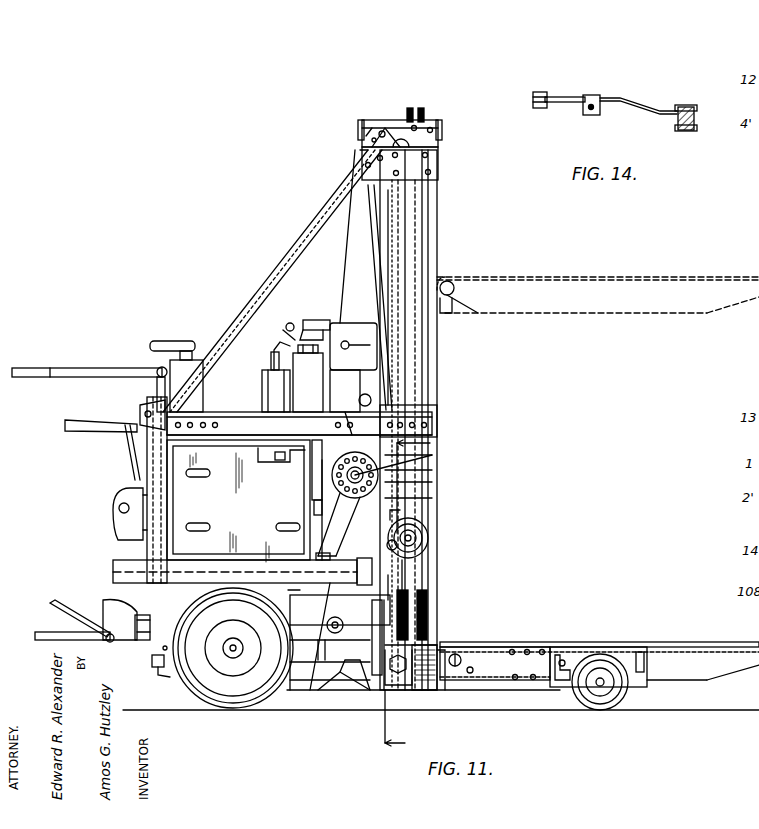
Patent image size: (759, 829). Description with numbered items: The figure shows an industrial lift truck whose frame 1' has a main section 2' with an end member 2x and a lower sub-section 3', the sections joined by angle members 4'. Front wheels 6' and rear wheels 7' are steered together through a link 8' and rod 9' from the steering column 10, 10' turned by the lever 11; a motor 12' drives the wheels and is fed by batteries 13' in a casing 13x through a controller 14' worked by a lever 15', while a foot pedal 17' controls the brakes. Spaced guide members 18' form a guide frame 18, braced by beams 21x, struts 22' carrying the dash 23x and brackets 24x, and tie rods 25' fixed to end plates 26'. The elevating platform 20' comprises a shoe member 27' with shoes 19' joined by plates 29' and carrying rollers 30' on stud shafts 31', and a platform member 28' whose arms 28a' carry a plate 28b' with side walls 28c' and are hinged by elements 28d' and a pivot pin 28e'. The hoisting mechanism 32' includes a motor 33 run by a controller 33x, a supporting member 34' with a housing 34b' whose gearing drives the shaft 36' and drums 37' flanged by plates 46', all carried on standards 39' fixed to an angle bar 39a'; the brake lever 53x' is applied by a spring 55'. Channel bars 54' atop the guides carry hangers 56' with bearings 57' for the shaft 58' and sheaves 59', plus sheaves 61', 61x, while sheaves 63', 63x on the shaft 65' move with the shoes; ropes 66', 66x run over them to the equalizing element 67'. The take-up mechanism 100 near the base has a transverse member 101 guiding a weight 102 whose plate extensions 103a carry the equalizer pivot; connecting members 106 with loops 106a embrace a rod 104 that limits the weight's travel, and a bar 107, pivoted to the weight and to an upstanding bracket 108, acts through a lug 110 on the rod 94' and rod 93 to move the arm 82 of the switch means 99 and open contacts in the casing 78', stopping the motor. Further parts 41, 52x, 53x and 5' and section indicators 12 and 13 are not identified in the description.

In FIG. 11, the guide frame 18 is at (423, 420).
In FIG. 11, the guide members 18' is at (421, 297).
In FIG. 11, the channel bars 54' is at (402, 133).
In FIG. 11, the end plate 26' is at (417, 163).
In FIG. 11, the sheave 61x is at (421, 110).
In FIG. 11, the rope 66x is at (410, 110).
In FIG. 11, the rope 66' is at (438, 103).
In FIG. 11, the sheave 61' is at (457, 112).
In FIG. 11, the bearings 57' is at (402, 112).
In FIG. 11, the hangers 56' is at (385, 102).
In FIG. 11, the sheave 59' is at (362, 98).
In FIG. 11, the shaft 58' is at (358, 111).
In FIG. 11, the tie rods 25' is at (272, 281).
In FIG. 11, the housing 34b' is at (299, 423).
In FIG. 11, the bracket 41 is at (358, 423).
In FIG. 11, the beams 21x is at (240, 412).
In FIG. 11, the supporting member 34' is at (427, 415).
In FIG. 11, the rod 94' is at (430, 297).
In FIG. 14, the rod 94' is at (587, 121).
In FIG. 11, the switch means 99 is at (388, 305).
In FIG. 11, the elevating platform 20' is at (598, 454).
In FIG. 11, the controller 33x is at (190, 345).
In FIG. 11, the spring 55' is at (308, 378).
In FIG. 11, the hoisting motor 33 is at (308, 387).
In FIG. 11, the hoisting mechanism 32' is at (270, 356).
In FIG. 11, the plate 52x is at (313, 320).
In FIG. 11, the knob 53x is at (288, 314).
In FIG. 11, the operating lever 53x' is at (277, 329).
In FIG. 11, the casing 78' is at (352, 332).
In FIG. 11, the rod 93 is at (346, 236).
In FIG. 11, the switch arm 82 is at (350, 391).
In FIG. 11, the struts 22' is at (127, 490).
In FIG. 11, the turning lever 11 is at (96, 368).
In FIG. 11, the steering column 10 is at (141, 403).
In FIG. 11, the lever 15' is at (102, 450).
In FIG. 11, the controller 14' is at (114, 514).
In FIG. 11, the frame 1' is at (86, 541).
In FIG. 11, the main section 2' is at (218, 571).
In FIG. 11, the end member 2x is at (320, 575).
In FIG. 11, the foot pedal 17' is at (79, 607).
In FIG. 11, the steering column 10' is at (66, 624).
In FIG. 11, the brackets 24x is at (133, 640).
In FIG. 11, the rod 9' is at (161, 674).
In FIG. 11, the dash 23x is at (167, 498).
In FIG. 11, the batteries 13' is at (274, 468).
In FIG. 11, the battery casing 13x is at (240, 512).
In FIG. 11, the drum 37' is at (294, 472).
In FIG. 11, the equalizing element 67' is at (302, 510).
In FIG. 11, the standards 39' is at (284, 510).
In FIG. 11, the angle bar 39a' is at (296, 551).
In FIG. 11, the gear wheel 13 is at (348, 504).
In FIG. 11, the driving motor 12' is at (308, 636).
In FIG. 11, the take-up mechanism 100 is at (335, 617).
In FIG. 11, the connecting member 106 is at (330, 644).
In FIG. 11, the loop 106a is at (322, 685).
In FIG. 11, the link 8' is at (416, 712).
In FIG. 11, the angle members 4' is at (330, 709).
In FIG. 11, the rod 104 is at (375, 680).
In FIG. 11, the stud shaft 31' is at (369, 675).
In FIG. 11, the shoe elements 30' is at (451, 622).
In FIG. 11, the shoe member 27' is at (430, 688).
In FIG. 11, the pivot pin 28e' is at (456, 697).
In FIG. 11, the frame 5' is at (495, 689).
In FIG. 11, the hinge element 28d' is at (478, 639).
In FIG. 11, the arms 28a' is at (579, 651).
In FIG. 11, the rear wheels 7' is at (600, 693).
In FIG. 11, the platform member 28' is at (703, 685).
In FIG. 11, the plate 28b' is at (732, 627).
In FIG. 11, the side walls 28c' is at (728, 689).
In FIG. 11, the sub-section 3' is at (495, 691).
In FIG. 11, the front wheels 6' is at (233, 660).
In FIG. 11, the weight 102 is at (428, 540).
In FIG. 14, the weight 102 is at (692, 131).
In FIG. 11, the plate extensions 103a is at (420, 520).
In FIG. 11, the transverse member 101 is at (415, 565).
In FIG. 11, the shoes 19' is at (423, 549).
In FIG. 11, the plates 29' is at (452, 580).
In FIG. 11, the sheave 63x is at (420, 590).
In FIG. 11, the sheave 63' is at (456, 611).
In FIG. 11, the shaft 65' is at (426, 622).
In FIG. 11, the shaft 36' is at (439, 450).
In FIG. 11, the round plate 46' is at (454, 463).
In FIG. 11, the section line 12 is at (422, 595).
In FIG. 14, the bracket 108 is at (560, 97).
In FIG. 14, the lug 110 is at (542, 108).
In FIG. 14, the bar 107 is at (636, 110).